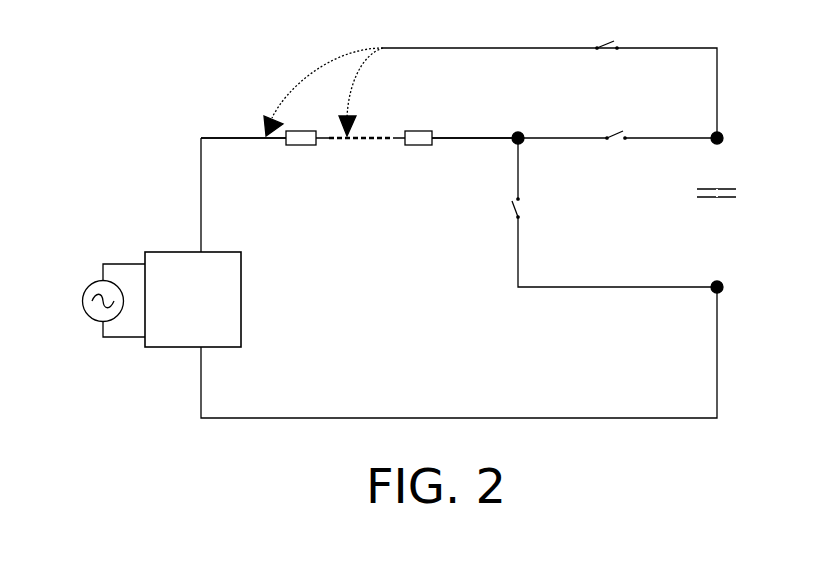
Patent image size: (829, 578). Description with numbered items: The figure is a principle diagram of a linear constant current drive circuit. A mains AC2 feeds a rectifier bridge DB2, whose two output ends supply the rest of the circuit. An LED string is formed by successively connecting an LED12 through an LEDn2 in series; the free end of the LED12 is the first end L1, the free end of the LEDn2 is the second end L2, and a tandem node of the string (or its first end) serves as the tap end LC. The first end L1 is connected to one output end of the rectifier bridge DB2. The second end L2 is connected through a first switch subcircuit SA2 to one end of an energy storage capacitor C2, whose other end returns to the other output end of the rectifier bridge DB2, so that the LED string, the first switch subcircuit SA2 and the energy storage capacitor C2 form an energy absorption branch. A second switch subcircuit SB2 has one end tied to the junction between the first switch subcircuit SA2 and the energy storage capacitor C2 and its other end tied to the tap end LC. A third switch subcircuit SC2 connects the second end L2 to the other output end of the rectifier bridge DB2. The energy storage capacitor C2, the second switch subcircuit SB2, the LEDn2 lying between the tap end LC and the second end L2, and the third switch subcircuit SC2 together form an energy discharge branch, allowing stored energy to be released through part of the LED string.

The first end L1 is at (243, 124).
The second end L2 is at (475, 124).
The tap end LC is at (323, 92).
The LED LED12 is at (305, 148).
The LED LEDn2 is at (422, 148).
The second switch subcircuit SB2 is at (606, 61).
The first switch subcircuit SA2 is at (616, 147).
The third switch subcircuit SC2 is at (497, 211).
The energy storage capacitor C2 is at (729, 195).
The rectifier bridge DB2 is at (215, 299).
The mains AC2 is at (105, 300).